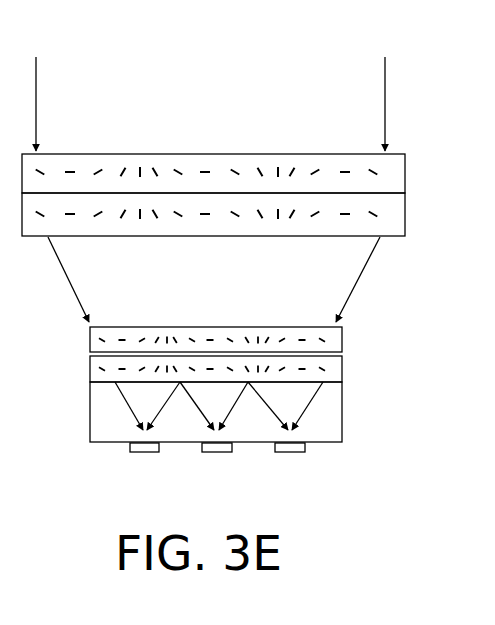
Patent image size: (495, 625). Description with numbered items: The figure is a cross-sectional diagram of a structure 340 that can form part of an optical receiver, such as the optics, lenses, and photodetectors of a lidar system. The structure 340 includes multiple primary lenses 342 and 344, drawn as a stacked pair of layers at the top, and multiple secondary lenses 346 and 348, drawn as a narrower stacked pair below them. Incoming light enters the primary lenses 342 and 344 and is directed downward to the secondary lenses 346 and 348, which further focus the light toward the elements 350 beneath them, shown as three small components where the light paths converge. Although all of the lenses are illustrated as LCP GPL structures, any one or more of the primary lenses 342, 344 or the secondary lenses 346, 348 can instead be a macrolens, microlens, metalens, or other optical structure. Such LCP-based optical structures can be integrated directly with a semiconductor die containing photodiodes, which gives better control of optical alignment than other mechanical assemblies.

The structure 340 is at (288, 99).
The primary lens 342 is at (78, 152).
The primary lens 344 is at (407, 217).
The secondary lens 346 is at (151, 327).
The secondary lens 348 is at (90, 368).
The light sensors / detectors 350 is at (290, 457).